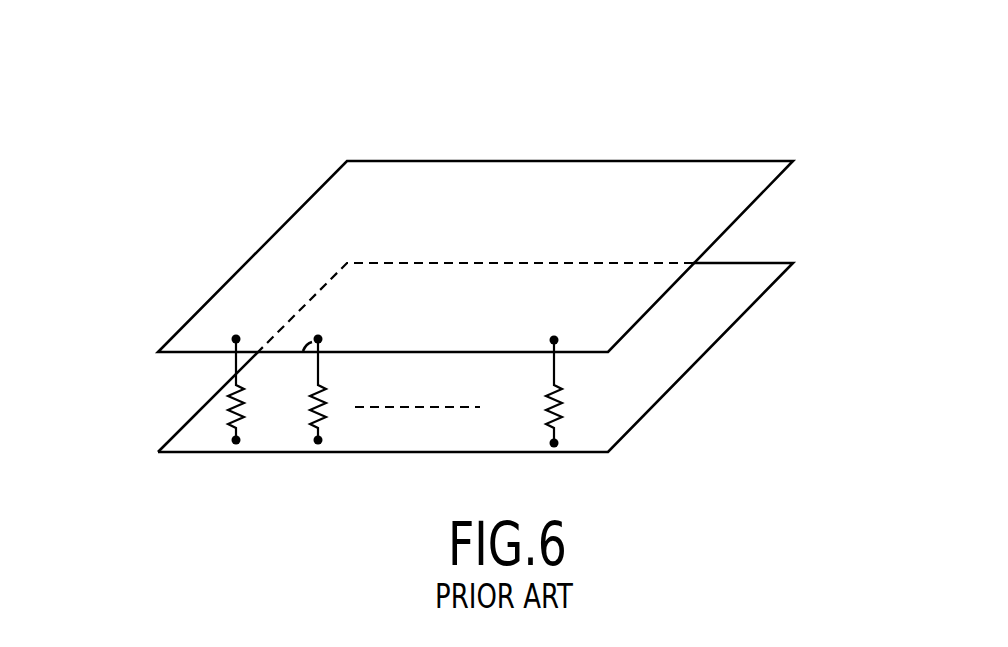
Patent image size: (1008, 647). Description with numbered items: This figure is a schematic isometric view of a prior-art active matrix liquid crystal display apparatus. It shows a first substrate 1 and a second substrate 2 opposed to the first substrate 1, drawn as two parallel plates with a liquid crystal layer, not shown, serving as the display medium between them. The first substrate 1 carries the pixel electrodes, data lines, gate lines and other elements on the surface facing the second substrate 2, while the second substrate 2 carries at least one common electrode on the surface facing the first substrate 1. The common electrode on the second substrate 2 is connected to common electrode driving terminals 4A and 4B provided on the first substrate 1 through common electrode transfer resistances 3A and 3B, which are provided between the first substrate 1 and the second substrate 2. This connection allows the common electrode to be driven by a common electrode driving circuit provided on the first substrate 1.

The first substrate 1 is at (750, 161).
The second substrate 2 is at (717, 342).
The common electrode transfer resistance 3A is at (232, 406).
The common electrode transfer resistance 3B is at (563, 402).
The common electrode driving terminal 4A is at (225, 350).
The common electrode driving terminal 4B is at (547, 347).